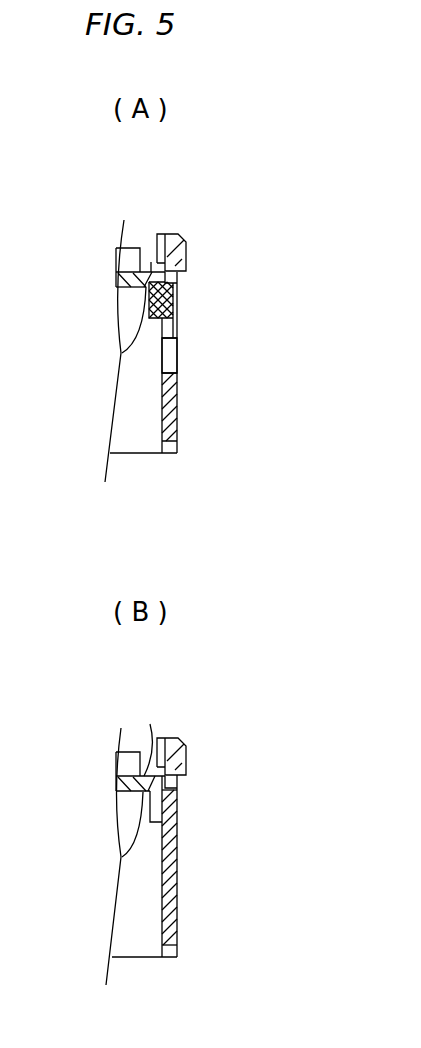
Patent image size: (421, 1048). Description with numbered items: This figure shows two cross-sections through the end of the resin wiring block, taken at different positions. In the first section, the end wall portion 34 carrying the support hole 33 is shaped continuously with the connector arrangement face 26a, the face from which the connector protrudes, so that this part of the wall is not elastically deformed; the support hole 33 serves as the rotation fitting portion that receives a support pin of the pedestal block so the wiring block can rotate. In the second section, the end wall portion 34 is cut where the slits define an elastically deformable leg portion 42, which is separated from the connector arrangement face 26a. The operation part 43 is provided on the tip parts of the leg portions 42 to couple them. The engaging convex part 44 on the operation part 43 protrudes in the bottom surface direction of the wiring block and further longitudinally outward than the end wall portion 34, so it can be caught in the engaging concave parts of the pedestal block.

The connector arrangement face 26a is at (142, 737).
The support hole 33 is at (172, 350).
The end wall portion 34 is at (172, 430).
The leg portion 42 is at (172, 850).
The operation part 43 is at (170, 233).
The engaging convex part 44 is at (179, 264).